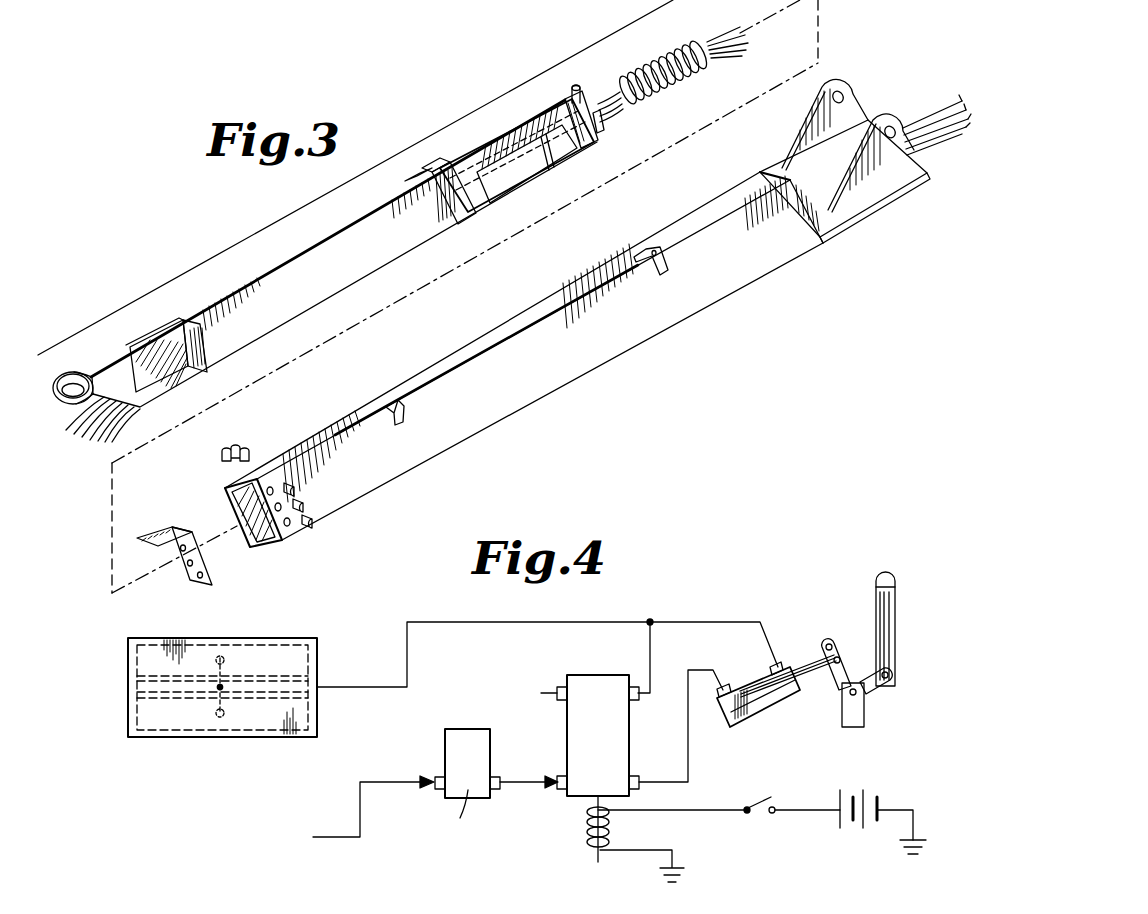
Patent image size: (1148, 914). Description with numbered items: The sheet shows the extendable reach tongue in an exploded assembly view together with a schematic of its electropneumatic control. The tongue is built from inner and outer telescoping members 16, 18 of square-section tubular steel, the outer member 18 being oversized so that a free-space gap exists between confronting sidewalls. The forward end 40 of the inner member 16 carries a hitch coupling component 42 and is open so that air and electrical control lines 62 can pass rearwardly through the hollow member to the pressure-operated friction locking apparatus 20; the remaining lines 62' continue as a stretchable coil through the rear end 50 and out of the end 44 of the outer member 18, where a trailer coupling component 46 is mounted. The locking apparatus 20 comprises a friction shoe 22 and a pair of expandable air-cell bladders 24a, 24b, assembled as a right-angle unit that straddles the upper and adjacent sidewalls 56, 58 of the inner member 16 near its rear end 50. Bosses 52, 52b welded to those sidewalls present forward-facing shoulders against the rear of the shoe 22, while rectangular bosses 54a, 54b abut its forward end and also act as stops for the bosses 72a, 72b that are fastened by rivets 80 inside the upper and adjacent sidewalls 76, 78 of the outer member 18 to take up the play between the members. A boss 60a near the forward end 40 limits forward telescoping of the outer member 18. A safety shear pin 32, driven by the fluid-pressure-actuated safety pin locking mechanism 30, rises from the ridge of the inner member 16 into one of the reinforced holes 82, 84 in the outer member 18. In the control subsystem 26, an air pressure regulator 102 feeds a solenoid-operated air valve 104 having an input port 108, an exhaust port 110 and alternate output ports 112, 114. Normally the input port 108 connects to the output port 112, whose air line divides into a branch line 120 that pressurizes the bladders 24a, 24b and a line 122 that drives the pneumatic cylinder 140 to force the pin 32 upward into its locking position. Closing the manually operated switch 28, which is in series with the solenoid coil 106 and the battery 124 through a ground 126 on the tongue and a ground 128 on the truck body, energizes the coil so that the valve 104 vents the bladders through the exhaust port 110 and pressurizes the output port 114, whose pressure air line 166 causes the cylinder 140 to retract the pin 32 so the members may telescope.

In FIG. 3, the inner telescoping member 16 is at (355, 203).
In FIG. 3, the outer telescoping member 18 is at (524, 359).
In FIG. 3, the pressure-operated friction locking apparatus 20 is at (531, 148).
In FIG. 3, the friction shoe 22 is at (500, 207).
In FIG. 4, the friction shoe 22 is at (199, 688).
In FIG. 3, the air-cell bladder 24a is at (517, 125).
In FIG. 4, the air-cell bladder 24a is at (280, 640).
In FIG. 3, the air-cell bladder 24b is at (537, 187).
In FIG. 4, the air-cell bladder 24b is at (250, 737).
In FIG. 4, the fluid pressure control subsystem 26 is at (522, 716).
In FIG. 4, the manually operated switch 28 is at (760, 802).
In FIG. 4, the safety pin locking mechanism 30 is at (886, 700).
In FIG. 3, the safety shear pin 32 is at (606, 90).
In FIG. 4, the safety shear pin 32 is at (894, 579).
In FIG. 3, the forward end 40 is at (140, 409).
In FIG. 3, the hitch coupling component 42 is at (88, 362).
In FIG. 3, the opposite end 44 is at (907, 122).
In FIG. 3, the trailer coupling component 46 is at (862, 75).
In FIG. 3, the rear end 50 is at (604, 128).
In FIG. 3, the boss 52 is at (575, 86).
In FIG. 3, the boss 52b is at (598, 146).
In FIG. 3, the boss 54a is at (412, 173).
In FIG. 3, the boss 54b is at (446, 226).
In FIG. 3, the upper sidewall 56 is at (282, 264).
In FIG. 3, the adjacent sidewall 58 is at (385, 244).
In FIG. 3, the boss 60a is at (186, 318).
In FIG. 3, the air and electrical control lines 62 is at (103, 455).
In FIG. 3, the control lines 62' is at (815, 114).
In FIG. 3, the boss 72a is at (172, 526).
In FIG. 3, the boss 72b is at (208, 578).
In FIG. 3, the upper sidewall 76 is at (486, 343).
In FIG. 3, the adjacent sidewall 78 is at (500, 403).
In FIG. 3, the rivets 80 is at (248, 447).
In FIG. 3, the reinforced hole 82 is at (390, 426).
In FIG. 3, the reinforced hole 84 is at (666, 277).
In FIG. 4, the air pressure regulator 102 is at (463, 729).
In FIG. 4, the solenoid-operated air valve 104 is at (599, 734).
In FIG. 4, the solenoid coil 106 is at (588, 846).
In FIG. 4, the input port 108 is at (558, 790).
In FIG. 4, the exhaust port 110 is at (558, 701).
In FIG. 4, the first output port 112 is at (638, 701).
In FIG. 4, the second output port 114 is at (639, 778).
In FIG. 4, the first branch air line 120 is at (462, 622).
In FIG. 4, the air line 122 is at (683, 622).
In FIG. 4, the battery 124 is at (861, 790).
In FIG. 4, the ground 126 is at (684, 857).
In FIG. 4, the ground 128 is at (913, 823).
In FIG. 4, the pneumatic cylinder 140 is at (772, 717).
In FIG. 4, the pressure air line 166 is at (688, 745).